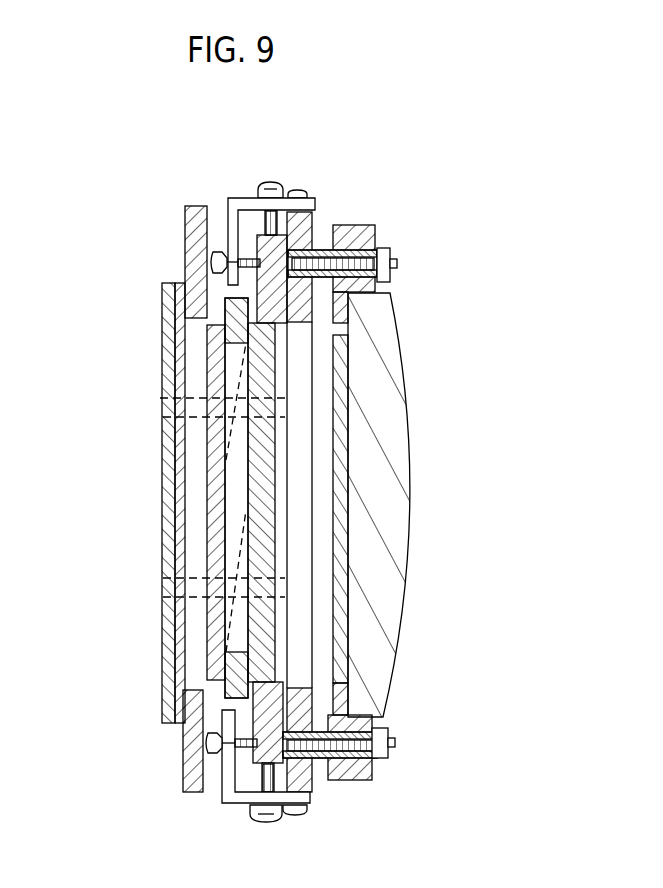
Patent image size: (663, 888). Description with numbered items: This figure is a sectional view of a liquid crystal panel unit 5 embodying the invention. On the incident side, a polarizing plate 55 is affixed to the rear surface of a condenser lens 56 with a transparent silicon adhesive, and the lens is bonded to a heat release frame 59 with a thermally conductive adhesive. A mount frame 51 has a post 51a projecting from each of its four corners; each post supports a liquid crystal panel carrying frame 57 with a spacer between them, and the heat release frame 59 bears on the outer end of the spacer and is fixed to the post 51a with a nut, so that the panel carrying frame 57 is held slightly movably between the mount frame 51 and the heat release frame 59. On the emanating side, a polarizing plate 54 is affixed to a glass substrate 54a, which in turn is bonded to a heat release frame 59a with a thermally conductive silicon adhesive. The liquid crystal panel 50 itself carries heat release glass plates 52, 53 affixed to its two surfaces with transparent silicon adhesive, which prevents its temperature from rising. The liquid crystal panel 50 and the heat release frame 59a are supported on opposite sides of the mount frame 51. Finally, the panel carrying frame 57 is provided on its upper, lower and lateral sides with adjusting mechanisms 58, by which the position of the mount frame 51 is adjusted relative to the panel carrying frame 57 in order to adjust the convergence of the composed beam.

The liquid crystal panel unit 5 is at (420, 167).
The liquid crystal panel 50 is at (215, 547).
The mount frame 51 is at (285, 335).
The post 51a is at (400, 263).
The heat release glass plate 52 is at (213, 482).
The heat release glass plate 53 is at (260, 473).
The polarizing plate on the emanating side 54 is at (163, 455).
The glass substrate 54a is at (180, 365).
The polarizing plate on the incident side 55 is at (342, 395).
The condenser lens 56 is at (385, 433).
The liquid crystal panel carrying frame 57 is at (318, 215).
The adjusting mechanism 58 is at (247, 198).
The heat release frame 59 is at (360, 226).
The heat release frame 59a is at (192, 208).